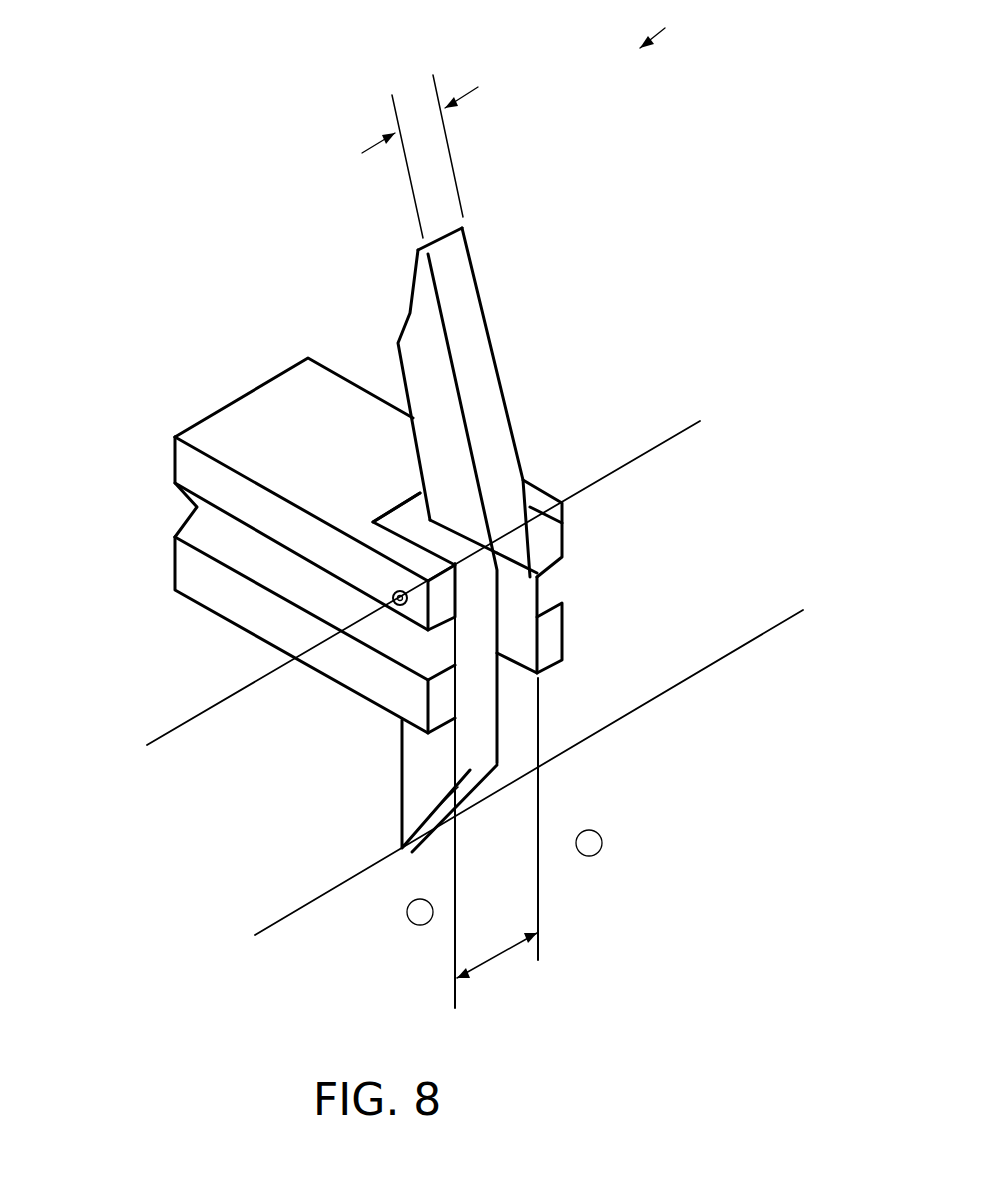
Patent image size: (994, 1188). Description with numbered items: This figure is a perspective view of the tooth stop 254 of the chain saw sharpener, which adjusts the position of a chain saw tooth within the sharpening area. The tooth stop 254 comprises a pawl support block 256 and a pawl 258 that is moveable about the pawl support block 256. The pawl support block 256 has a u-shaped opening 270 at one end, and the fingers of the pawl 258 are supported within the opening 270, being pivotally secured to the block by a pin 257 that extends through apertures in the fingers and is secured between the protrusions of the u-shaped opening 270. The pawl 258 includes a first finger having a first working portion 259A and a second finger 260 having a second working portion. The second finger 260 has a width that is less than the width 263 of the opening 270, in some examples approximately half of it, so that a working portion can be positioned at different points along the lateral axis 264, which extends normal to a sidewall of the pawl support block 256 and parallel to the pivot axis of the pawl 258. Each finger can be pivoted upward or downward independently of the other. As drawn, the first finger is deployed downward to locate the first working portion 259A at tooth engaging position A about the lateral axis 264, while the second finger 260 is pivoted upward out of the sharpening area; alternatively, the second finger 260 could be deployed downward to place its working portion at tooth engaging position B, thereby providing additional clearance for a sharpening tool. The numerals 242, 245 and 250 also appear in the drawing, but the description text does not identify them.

The blade width 242 is at (478, 88).
The axis line 245 is at (597, 480).
The clamp block 250 is at (268, 413).
The tooth stop 254 is at (665, 28).
The pawl support block 256 is at (473, 747).
The pin 257 is at (393, 592).
The pawl 258 is at (505, 595).
The first working portion 259A is at (455, 800).
The second finger 260 is at (467, 325).
The width of the opening 263 is at (495, 962).
The lateral axis 264 is at (743, 647).
The u-shaped opening 270 is at (418, 520).
The tooth engaging position A is at (442, 845).
The tooth engaging position B is at (508, 783).